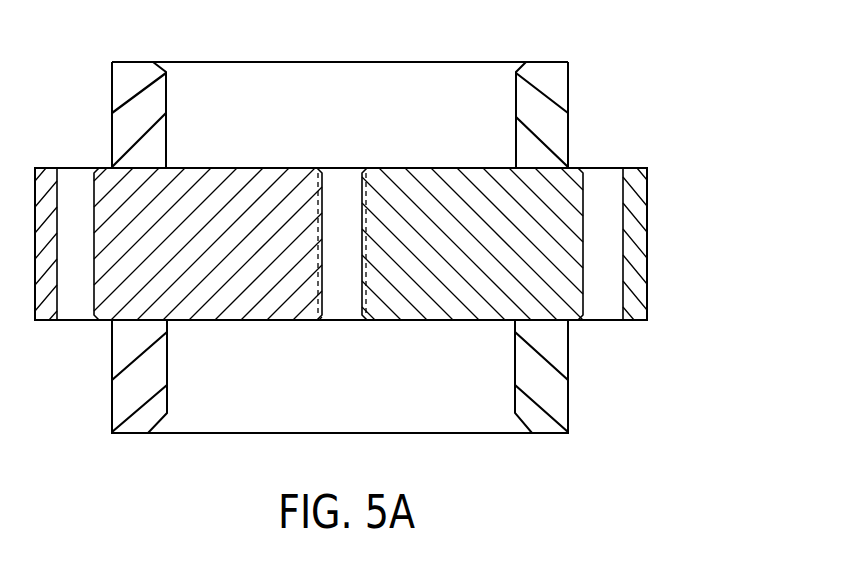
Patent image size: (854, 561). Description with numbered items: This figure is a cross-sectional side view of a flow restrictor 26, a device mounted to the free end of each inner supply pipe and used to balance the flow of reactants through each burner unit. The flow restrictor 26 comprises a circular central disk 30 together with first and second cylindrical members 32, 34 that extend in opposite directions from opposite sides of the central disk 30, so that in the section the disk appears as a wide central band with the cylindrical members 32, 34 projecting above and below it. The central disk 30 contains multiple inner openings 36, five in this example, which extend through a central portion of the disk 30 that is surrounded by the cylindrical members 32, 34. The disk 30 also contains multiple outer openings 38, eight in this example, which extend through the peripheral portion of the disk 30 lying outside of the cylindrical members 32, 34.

The flow restrictor 26 is at (389, 227).
The circular central disk 30 is at (651, 230).
The first cylindrical member 32 is at (577, 364).
The second cylindrical member 34 is at (571, 121).
The inner openings 36 is at (338, 185).
The outer openings 38 is at (75, 183).